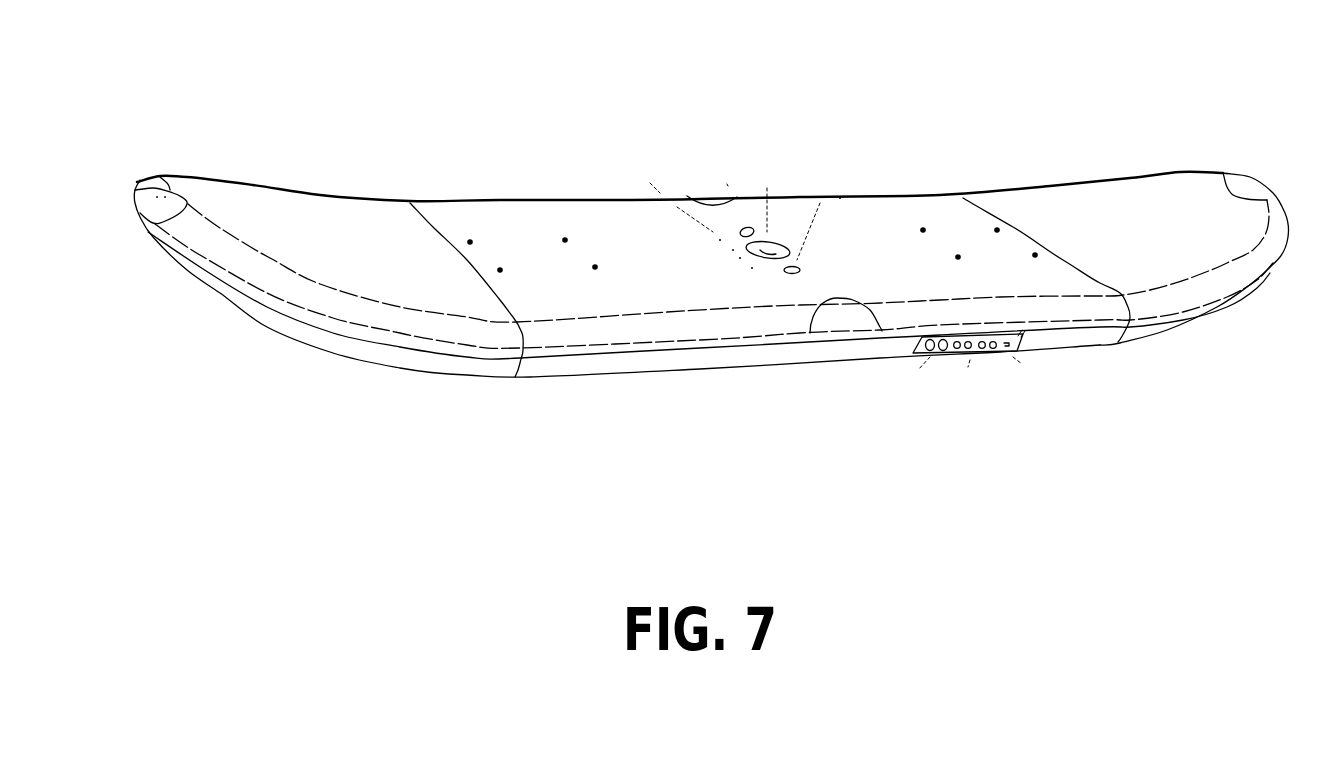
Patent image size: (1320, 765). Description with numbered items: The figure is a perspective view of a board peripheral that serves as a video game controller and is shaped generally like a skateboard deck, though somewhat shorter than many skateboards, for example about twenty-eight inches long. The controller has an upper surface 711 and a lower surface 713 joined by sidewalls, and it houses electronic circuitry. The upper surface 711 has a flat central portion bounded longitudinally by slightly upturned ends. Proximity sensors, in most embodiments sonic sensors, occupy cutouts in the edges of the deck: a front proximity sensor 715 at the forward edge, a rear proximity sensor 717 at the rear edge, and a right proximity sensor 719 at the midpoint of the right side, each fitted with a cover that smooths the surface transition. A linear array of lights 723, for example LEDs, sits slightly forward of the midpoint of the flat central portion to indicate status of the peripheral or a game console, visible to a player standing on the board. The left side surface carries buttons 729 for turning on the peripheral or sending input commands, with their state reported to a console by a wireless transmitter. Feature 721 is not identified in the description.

The upper surface 711 is at (514, 232).
The lower surface 713 is at (506, 428).
The front proximity sensor 715 is at (147, 222).
The rear proximity sensor 717 is at (1247, 175).
The right proximity sensor 719 is at (840, 330).
The top edge opening 721 is at (707, 193).
The linear array of lights 723 is at (723, 252).
The buttons 729 is at (1002, 371).